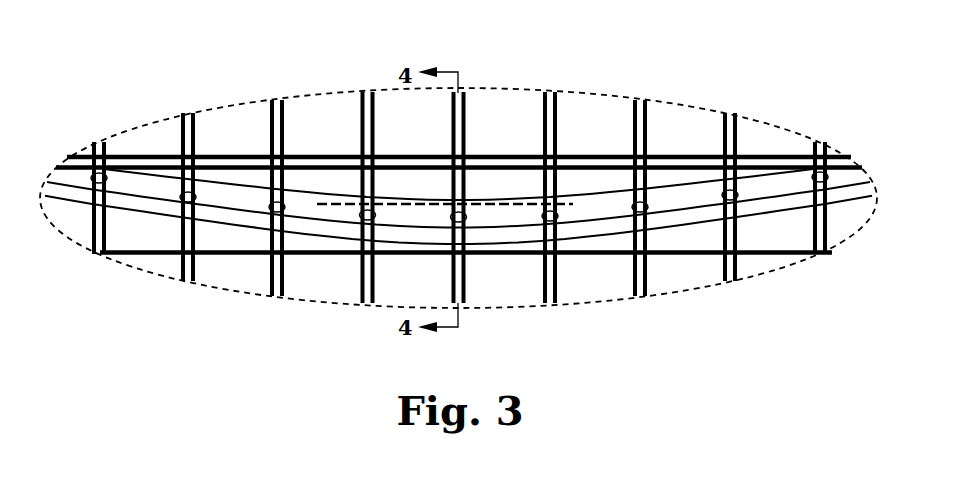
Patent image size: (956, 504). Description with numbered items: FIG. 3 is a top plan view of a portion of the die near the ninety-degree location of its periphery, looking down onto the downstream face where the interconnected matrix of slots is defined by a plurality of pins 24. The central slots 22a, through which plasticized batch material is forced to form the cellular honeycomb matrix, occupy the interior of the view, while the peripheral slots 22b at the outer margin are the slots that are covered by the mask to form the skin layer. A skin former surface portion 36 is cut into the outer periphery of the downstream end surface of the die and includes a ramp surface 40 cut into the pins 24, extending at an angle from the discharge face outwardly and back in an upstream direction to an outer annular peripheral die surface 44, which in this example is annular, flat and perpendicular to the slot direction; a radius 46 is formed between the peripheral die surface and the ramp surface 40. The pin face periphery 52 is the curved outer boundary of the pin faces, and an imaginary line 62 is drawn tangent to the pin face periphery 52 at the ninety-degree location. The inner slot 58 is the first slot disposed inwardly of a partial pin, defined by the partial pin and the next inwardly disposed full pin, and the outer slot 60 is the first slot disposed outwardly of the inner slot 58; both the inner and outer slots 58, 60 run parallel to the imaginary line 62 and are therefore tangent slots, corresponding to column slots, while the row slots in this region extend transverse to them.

The central slots 22a is at (186, 113).
The peripheral slots 22b is at (363, 285).
The pins 24 is at (302, 115).
The skin former surface portion 36 is at (195, 266).
The ramp surface 40 is at (410, 216).
The outer annular peripheral die surface 44 is at (390, 287).
The radius 46 is at (440, 232).
The pin face periphery 52 is at (465, 194).
The inner slot 58 is at (434, 157).
The outer slot 60 is at (411, 252).
The imaginary line 62 is at (343, 204).